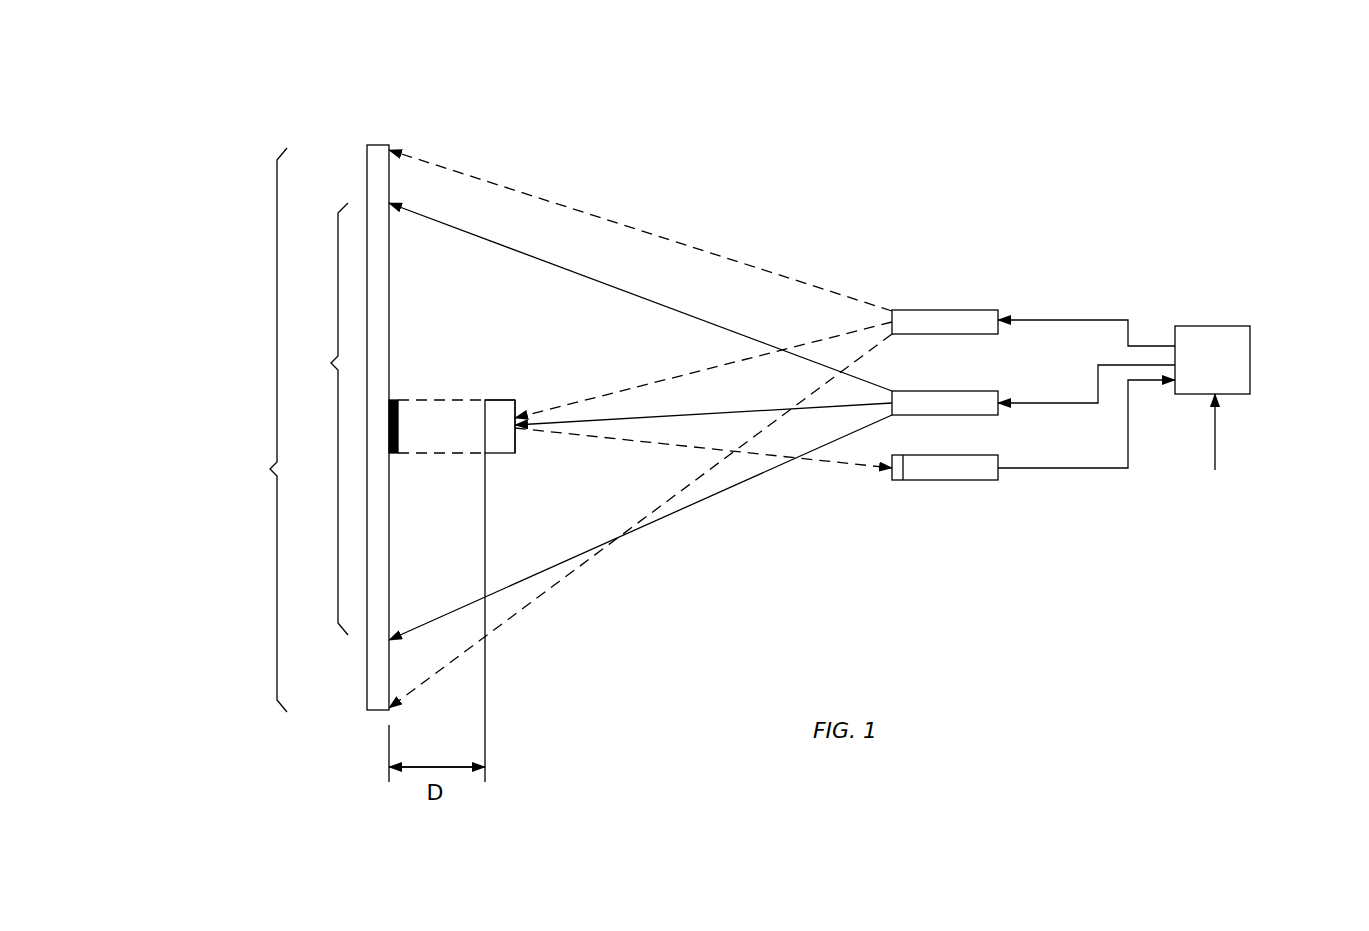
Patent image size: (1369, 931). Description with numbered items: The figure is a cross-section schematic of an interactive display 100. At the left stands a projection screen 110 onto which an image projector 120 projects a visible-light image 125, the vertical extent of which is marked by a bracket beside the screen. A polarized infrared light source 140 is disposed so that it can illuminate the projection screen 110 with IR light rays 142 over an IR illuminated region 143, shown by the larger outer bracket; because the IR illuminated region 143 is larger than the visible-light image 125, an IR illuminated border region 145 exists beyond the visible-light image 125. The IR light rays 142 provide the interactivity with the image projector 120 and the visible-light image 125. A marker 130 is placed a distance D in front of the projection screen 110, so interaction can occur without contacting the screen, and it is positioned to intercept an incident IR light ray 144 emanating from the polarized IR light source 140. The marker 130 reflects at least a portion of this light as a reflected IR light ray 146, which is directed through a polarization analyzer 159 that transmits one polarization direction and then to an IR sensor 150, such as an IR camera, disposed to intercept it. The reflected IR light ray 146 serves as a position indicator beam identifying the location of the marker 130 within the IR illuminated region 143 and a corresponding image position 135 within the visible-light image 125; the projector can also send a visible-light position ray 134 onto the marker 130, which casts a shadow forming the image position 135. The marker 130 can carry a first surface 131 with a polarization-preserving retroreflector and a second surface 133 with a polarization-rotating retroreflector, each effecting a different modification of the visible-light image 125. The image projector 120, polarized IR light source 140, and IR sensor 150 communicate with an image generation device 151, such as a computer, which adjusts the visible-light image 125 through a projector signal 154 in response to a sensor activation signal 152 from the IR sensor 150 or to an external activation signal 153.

The interactive display 100 is at (288, 104).
The projection screen 110 is at (378, 143).
The image projector 120 is at (970, 402).
The visible-light image 125 is at (316, 419).
The marker 130 is at (500, 453).
The first surface 131 is at (518, 410).
The second surface 133 is at (495, 400).
The visible-light position ray 134 is at (682, 416).
The image position 135 is at (398, 420).
The polarized infrared light source 140 is at (921, 318).
The IR light rays 142 is at (606, 218).
The IR illuminated region 143 is at (255, 430).
The incident IR light ray 144 is at (825, 338).
The IR illuminated border region 145 is at (390, 178).
The reflected IR light ray 146 is at (839, 464).
The IR sensor 150 is at (933, 468).
The image generation device 151 is at (1218, 326).
The sensor activation signal 152 is at (1108, 470).
The external activation signal 153 is at (1218, 445).
The projector signal 154 is at (1057, 404).
The polarization analyzer 159 is at (898, 482).